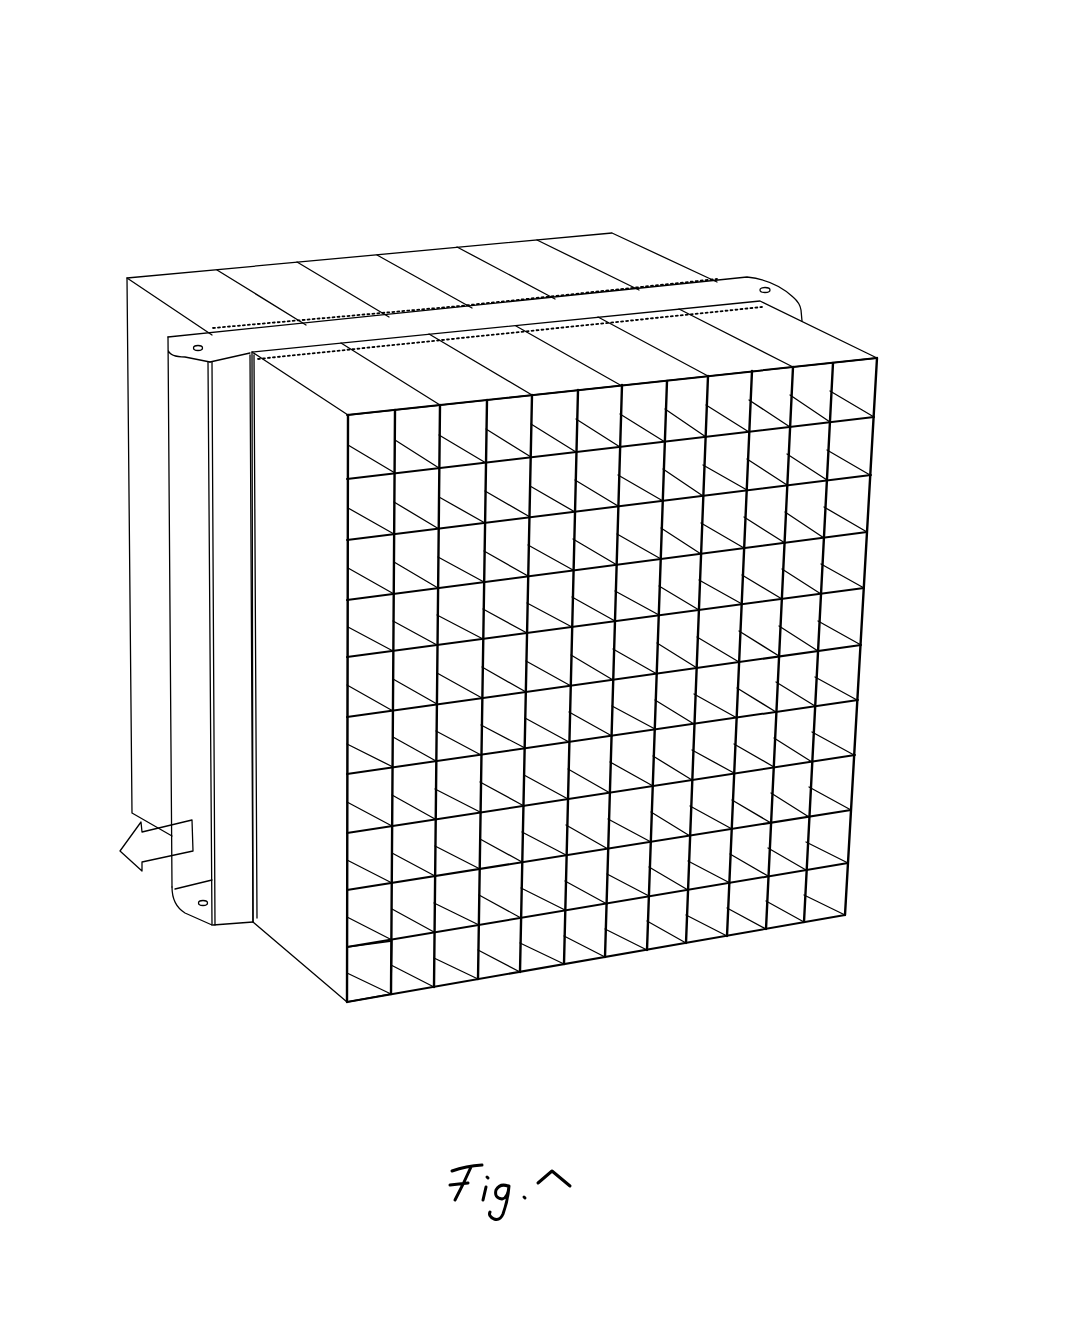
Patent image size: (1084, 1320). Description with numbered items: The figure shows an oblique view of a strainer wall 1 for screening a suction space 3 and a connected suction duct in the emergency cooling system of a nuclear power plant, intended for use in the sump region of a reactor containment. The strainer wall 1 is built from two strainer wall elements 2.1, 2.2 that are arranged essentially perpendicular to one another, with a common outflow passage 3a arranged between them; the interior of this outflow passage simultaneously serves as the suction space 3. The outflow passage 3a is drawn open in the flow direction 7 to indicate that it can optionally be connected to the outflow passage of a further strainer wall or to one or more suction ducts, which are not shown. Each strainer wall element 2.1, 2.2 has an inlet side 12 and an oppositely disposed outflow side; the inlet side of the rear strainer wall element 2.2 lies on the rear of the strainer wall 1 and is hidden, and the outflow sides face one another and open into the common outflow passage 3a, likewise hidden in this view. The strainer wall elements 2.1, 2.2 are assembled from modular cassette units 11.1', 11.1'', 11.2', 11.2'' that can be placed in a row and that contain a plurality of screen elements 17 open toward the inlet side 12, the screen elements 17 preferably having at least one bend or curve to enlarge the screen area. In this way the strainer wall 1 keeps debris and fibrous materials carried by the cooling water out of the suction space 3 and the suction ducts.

The strainer wall 1 is at (736, 100).
The strainer wall element 2.1 is at (599, 614).
The strainer wall element 2.2 is at (421, 219).
The suction space 3 is at (195, 627).
The common outflow passage 3a is at (658, 302).
The flow direction 7 is at (112, 852).
The modular cassette unit 11.1' is at (356, 297).
The modular cassette unit 11.1'' is at (617, 281).
The modular cassette unit 11.2' is at (215, 242).
The modular cassette unit 11.2'' is at (452, 228).
The inlet side 12 is at (646, 709).
The screen element 17 is at (367, 967).